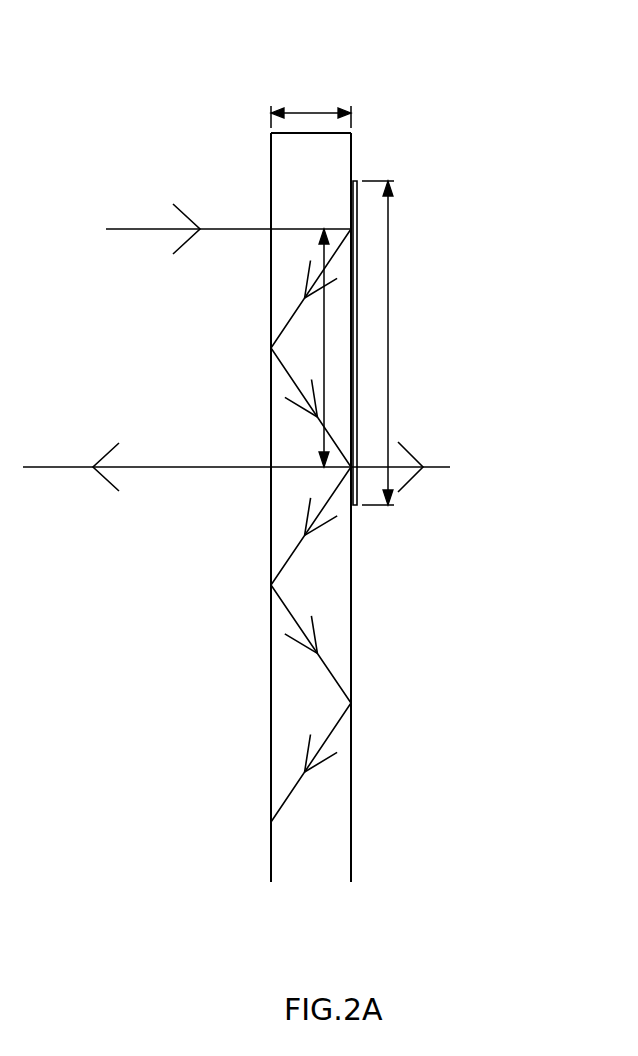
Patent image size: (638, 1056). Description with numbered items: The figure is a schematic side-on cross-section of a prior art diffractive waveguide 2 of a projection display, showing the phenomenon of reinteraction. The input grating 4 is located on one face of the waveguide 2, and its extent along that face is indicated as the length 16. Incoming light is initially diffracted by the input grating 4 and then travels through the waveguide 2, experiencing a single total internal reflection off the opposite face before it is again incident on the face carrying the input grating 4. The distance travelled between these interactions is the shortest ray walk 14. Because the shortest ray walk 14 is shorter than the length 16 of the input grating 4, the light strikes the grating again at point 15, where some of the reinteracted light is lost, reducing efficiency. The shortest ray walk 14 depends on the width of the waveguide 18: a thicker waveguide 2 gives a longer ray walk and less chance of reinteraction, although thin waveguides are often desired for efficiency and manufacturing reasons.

The waveguide 2 is at (396, 99).
The input grating 4 is at (357, 242).
The shortest ray walk 14 is at (323, 358).
The point 15 is at (354, 466).
The length 16 is at (389, 331).
The width of the waveguide 18 is at (318, 113).